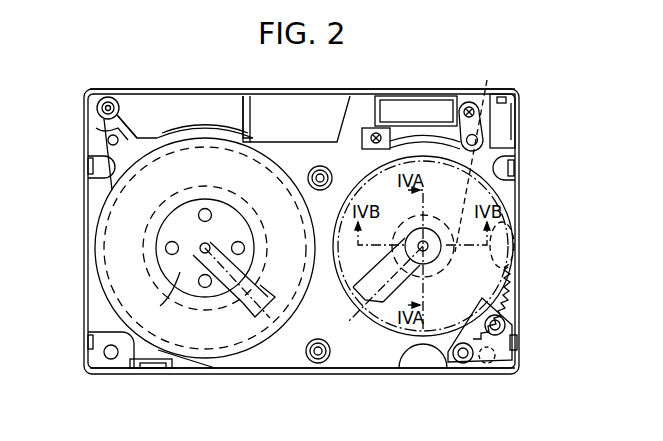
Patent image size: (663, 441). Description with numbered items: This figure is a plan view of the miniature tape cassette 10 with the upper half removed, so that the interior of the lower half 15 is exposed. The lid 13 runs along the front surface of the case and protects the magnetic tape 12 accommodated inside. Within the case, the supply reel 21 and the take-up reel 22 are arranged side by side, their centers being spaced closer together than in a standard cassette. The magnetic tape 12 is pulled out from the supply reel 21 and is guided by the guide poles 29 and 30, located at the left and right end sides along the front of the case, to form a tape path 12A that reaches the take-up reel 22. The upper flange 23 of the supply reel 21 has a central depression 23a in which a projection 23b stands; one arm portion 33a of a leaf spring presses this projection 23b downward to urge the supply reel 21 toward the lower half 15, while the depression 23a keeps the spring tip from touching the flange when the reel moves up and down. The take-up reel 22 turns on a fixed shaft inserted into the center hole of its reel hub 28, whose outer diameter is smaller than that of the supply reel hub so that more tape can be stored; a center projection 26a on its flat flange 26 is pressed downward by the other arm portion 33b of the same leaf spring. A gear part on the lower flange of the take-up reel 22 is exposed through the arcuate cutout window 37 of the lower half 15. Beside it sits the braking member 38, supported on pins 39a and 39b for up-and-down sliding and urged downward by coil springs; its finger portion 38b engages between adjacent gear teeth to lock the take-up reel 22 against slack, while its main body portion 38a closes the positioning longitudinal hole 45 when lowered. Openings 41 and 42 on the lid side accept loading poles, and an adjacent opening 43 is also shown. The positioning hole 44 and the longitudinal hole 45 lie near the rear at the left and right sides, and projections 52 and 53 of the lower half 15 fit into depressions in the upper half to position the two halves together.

The tape cassette 10 is at (137, 55).
The magnetic tape 12 is at (100, 143).
The tape path 12A is at (237, 100).
The lid 13 is at (205, 88).
The lower half 15 is at (277, 366).
The supply reel 21 is at (95, 278).
The take-up reel 22 is at (503, 196).
The upper flange 23 is at (102, 220).
The depression 23a is at (160, 306).
The projection 23b is at (212, 246).
The upper flange 26 is at (506, 292).
The center projection 26a is at (428, 266).
The reel hub 28 is at (432, 252).
The guide pole 29 is at (106, 98).
The guide pole 30 is at (479, 153).
The arm portion 33a is at (244, 306).
The arm portion 33b is at (386, 315).
The cutout window 37 is at (507, 258).
The braking member 38 is at (500, 352).
The main body portion 38a is at (508, 357).
The finger portion 38b is at (484, 300).
The pin 39a is at (505, 330).
The pin 39b is at (455, 360).
The opening 41 is at (172, 108).
The opening 42 is at (297, 108).
The window 43 is at (415, 105).
The positioning hole 44 is at (110, 359).
The positioning longitudinal hole 45 is at (480, 363).
The projection 52 is at (320, 168).
The projection 53 is at (318, 340).